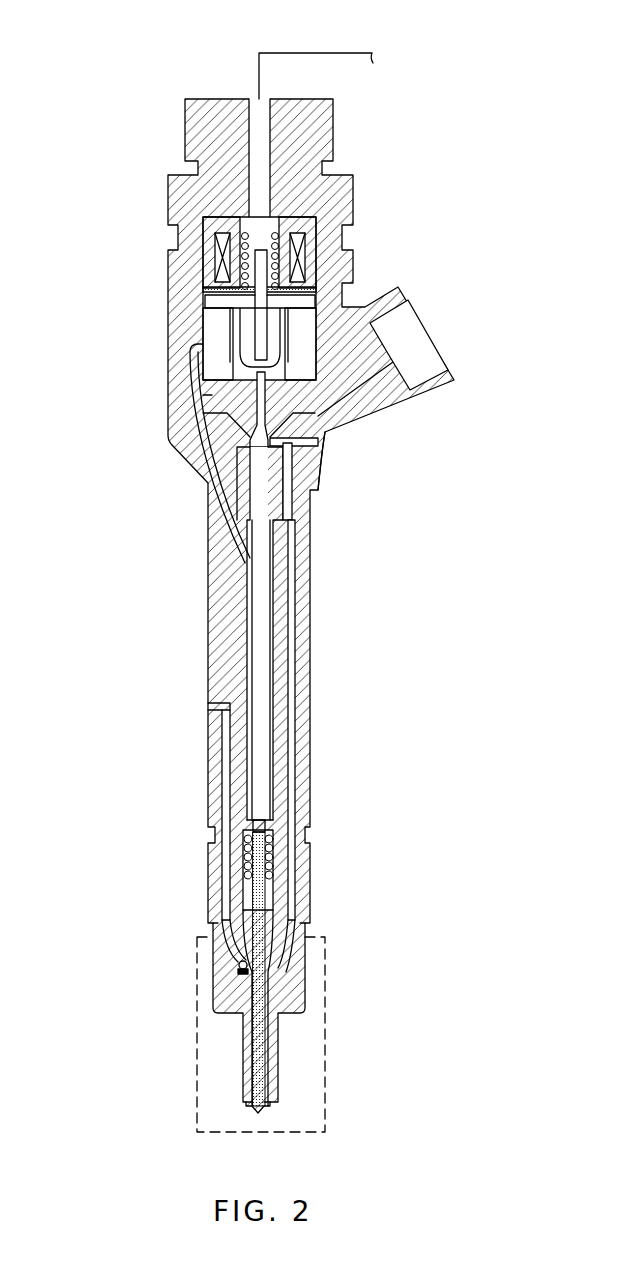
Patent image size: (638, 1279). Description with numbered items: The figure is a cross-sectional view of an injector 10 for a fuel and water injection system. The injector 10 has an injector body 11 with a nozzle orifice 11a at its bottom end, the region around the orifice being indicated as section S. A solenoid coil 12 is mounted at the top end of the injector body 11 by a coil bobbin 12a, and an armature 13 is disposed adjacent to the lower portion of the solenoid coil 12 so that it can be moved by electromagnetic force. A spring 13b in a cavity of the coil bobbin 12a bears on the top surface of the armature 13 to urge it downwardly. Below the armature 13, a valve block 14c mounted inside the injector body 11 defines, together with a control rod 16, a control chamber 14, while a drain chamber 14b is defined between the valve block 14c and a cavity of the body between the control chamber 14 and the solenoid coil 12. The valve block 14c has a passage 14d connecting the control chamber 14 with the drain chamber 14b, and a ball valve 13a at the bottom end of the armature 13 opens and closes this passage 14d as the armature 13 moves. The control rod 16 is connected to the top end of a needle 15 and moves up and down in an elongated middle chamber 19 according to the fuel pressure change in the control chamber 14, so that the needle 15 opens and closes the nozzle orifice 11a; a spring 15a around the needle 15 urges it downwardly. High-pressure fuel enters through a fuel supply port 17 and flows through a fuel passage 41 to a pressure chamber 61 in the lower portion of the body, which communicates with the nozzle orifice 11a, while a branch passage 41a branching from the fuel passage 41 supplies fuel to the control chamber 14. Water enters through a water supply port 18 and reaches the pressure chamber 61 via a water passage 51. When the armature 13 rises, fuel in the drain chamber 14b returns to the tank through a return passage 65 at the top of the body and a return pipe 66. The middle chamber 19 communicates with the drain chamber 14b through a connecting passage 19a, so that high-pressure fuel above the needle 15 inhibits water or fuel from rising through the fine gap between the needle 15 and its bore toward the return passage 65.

The injector 10 is at (47, 111).
The injector body 11 is at (225, 680).
The nozzle orifice 11a is at (262, 1114).
The solenoid coil 12 is at (300, 262).
The coil bobbin 12a is at (213, 225).
The armature 13 is at (232, 300).
The ball valve 13a is at (258, 383).
The spring 13b is at (313, 217).
The control chamber 14 is at (220, 518).
The drain chamber 14b is at (213, 368).
The valve block 14c is at (200, 395).
The passage 14d is at (333, 443).
The needle 15 is at (265, 927).
The spring 15a is at (273, 860).
The control rod 16 is at (262, 608).
The fuel supply port 17 is at (428, 352).
The water supply port 18 is at (208, 705).
The middle chamber 19 is at (248, 760).
The connecting passage 19a is at (190, 470).
The fuel passage 41 is at (355, 398).
The branch passage 41a is at (325, 487).
The water passage 51 is at (223, 862).
The pressure chamber 61 is at (280, 980).
The return passage 65 is at (258, 115).
The return pipe 66 is at (290, 53).
The injection section S is at (340, 1055).